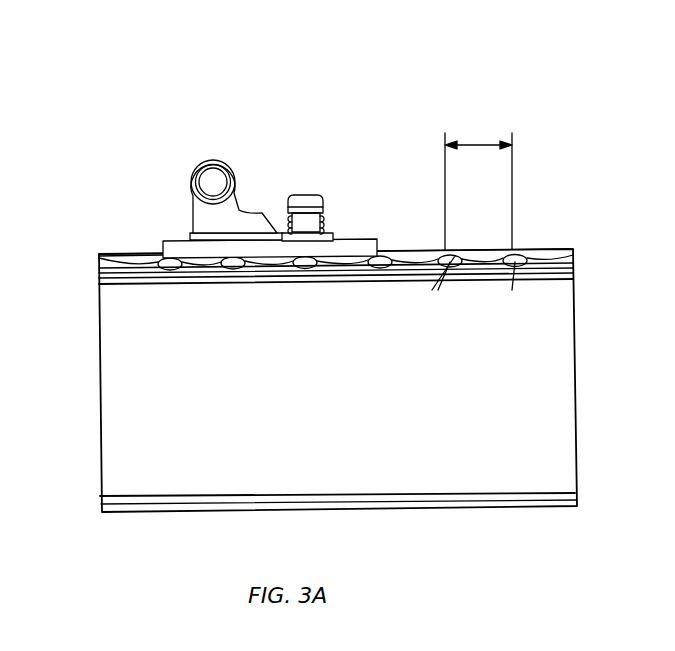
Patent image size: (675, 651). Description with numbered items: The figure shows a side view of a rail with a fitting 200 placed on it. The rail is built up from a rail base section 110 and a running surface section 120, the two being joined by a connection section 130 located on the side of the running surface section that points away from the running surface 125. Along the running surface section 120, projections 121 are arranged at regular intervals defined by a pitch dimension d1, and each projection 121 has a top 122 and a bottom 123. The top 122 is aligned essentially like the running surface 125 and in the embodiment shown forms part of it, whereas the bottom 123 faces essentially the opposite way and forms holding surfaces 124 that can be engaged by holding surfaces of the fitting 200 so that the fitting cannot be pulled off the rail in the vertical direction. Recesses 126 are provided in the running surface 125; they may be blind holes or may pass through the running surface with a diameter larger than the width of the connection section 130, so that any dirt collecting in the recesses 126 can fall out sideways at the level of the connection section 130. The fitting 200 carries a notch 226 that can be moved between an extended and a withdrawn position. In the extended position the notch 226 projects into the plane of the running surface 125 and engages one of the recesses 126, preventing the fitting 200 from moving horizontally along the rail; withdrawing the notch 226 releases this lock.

The rail base section 110 is at (563, 366).
The running surface section 120 is at (99, 258).
The projection 121 is at (530, 250).
The top 122 is at (515, 250).
The bottom 123 is at (450, 262).
The holding surfaces 124 is at (429, 323).
The running surface 125 is at (125, 250).
The recesses 126 is at (513, 268).
The connection section 130 is at (573, 257).
The fitting 200 is at (232, 172).
The notch 226 is at (305, 262).
The pitch dimension d1 is at (478, 145).